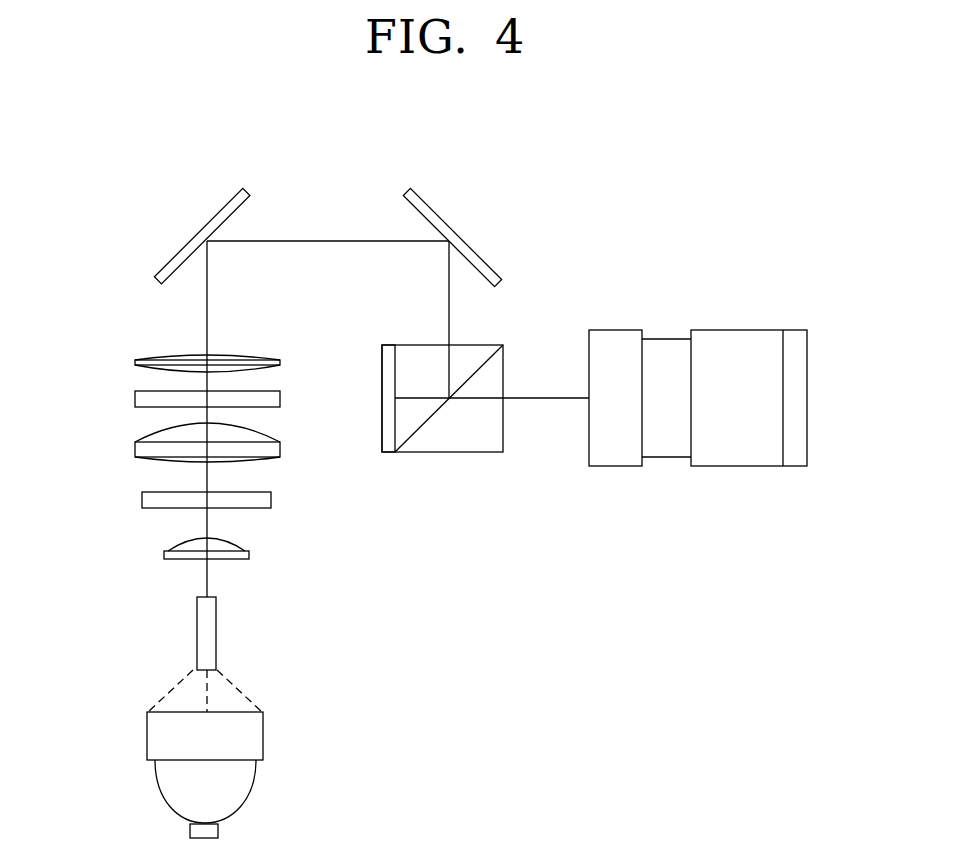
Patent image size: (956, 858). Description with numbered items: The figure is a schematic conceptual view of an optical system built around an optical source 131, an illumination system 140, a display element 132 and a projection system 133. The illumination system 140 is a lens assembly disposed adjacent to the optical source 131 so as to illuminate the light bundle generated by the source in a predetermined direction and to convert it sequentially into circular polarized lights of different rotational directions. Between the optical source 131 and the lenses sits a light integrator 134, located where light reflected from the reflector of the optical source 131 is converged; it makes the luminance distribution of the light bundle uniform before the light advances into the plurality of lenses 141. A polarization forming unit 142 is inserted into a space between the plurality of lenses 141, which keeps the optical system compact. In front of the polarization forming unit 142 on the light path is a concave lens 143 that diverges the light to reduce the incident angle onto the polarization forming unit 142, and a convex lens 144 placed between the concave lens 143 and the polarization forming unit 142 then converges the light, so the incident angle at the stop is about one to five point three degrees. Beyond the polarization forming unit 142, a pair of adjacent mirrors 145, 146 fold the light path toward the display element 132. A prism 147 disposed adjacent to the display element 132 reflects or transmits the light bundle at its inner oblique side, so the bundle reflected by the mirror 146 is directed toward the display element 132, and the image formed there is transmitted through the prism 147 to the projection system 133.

The optical source 131 is at (253, 736).
The display element 132 is at (389, 452).
The projection system 133 is at (746, 340).
The light integrator 134 is at (200, 632).
The illumination system 140 is at (110, 357).
The plurality of lenses 141 is at (127, 357).
The polarization forming unit 142 is at (275, 398).
The concave lens 143 is at (268, 500).
The convex lens 144 is at (275, 448).
The mirror 145 is at (215, 222).
The mirror 146 is at (442, 222).
The prism 147 is at (466, 445).